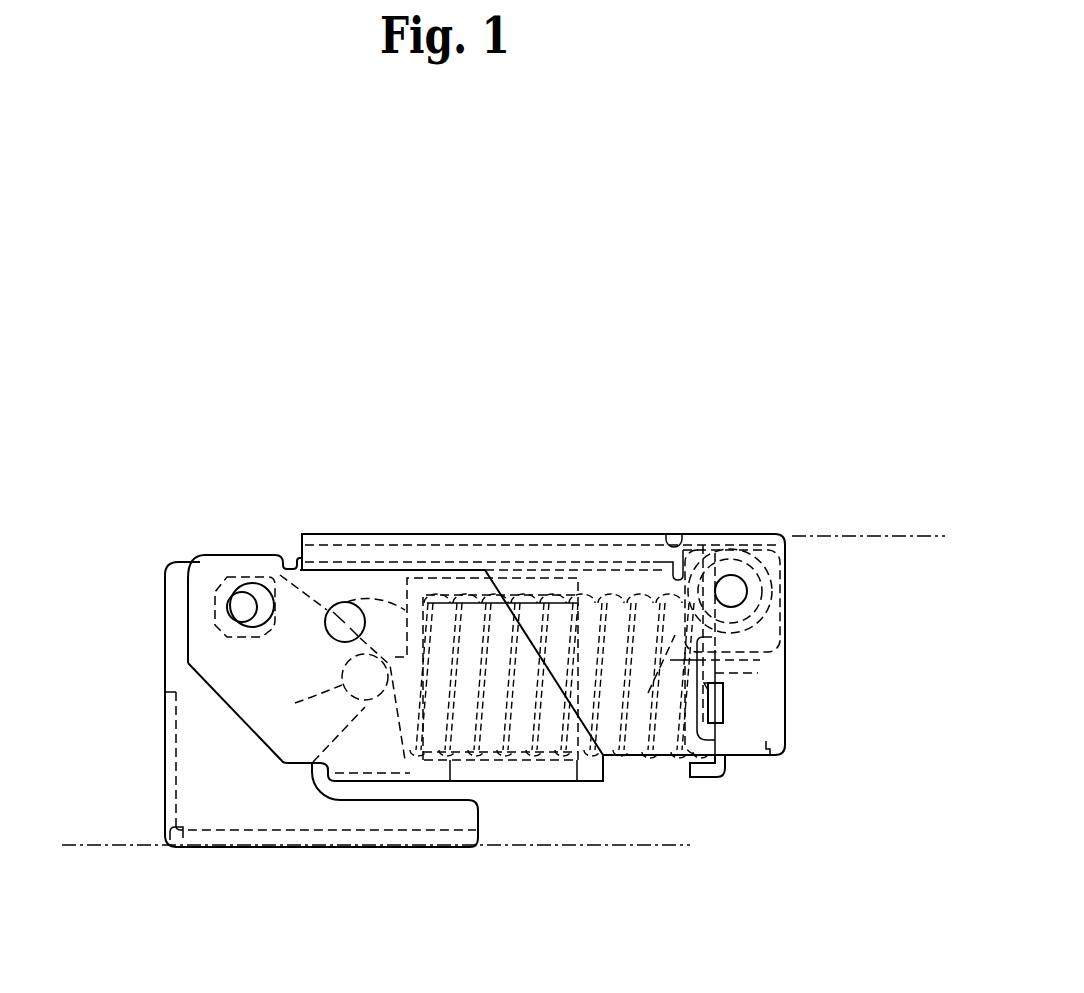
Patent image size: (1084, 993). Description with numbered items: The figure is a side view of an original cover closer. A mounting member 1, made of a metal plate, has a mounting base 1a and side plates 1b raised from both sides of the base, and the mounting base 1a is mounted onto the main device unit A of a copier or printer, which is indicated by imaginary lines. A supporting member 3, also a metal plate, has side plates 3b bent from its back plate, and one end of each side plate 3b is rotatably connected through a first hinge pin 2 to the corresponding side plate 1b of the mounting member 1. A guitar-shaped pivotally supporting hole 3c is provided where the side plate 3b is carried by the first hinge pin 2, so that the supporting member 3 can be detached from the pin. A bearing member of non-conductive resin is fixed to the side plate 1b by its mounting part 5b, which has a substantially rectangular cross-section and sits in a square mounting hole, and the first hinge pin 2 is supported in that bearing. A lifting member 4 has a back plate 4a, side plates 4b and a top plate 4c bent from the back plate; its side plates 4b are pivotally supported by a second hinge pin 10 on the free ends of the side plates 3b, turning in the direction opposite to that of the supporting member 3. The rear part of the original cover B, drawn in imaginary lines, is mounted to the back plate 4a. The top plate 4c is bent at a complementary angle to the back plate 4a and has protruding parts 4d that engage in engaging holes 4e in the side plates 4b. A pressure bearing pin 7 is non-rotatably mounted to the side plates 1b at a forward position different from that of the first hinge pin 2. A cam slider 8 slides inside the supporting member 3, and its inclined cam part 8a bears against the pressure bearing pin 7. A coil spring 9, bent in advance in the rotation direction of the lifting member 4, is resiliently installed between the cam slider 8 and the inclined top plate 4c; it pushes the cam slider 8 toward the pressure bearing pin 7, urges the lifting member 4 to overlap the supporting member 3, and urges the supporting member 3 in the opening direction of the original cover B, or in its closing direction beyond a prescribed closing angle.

The mounting member 1 is at (158, 748).
The mounting base 1a is at (310, 833).
The side plates 1b is at (178, 693).
The first hinge pin 2 is at (248, 597).
The supporting member 3 is at (605, 795).
The side plates 3b is at (387, 575).
The pivotally supporting holes 3c is at (263, 613).
The lifting member 4 is at (570, 513).
The back plate 4a is at (500, 537).
The side plates 4b is at (770, 756).
The top plate 4c is at (767, 675).
The protruding parts 4d is at (723, 713).
The engaging holes 4e is at (723, 688).
The mounting part 5b is at (224, 585).
The pressure bearing pin 7 is at (334, 695).
The cam slider 8 is at (342, 608).
The inclined cam part 8a is at (397, 718).
The coil spring 9 is at (613, 598).
The second hinge pin 10 is at (738, 594).
The main device unit A is at (610, 845).
The original cover B is at (827, 536).